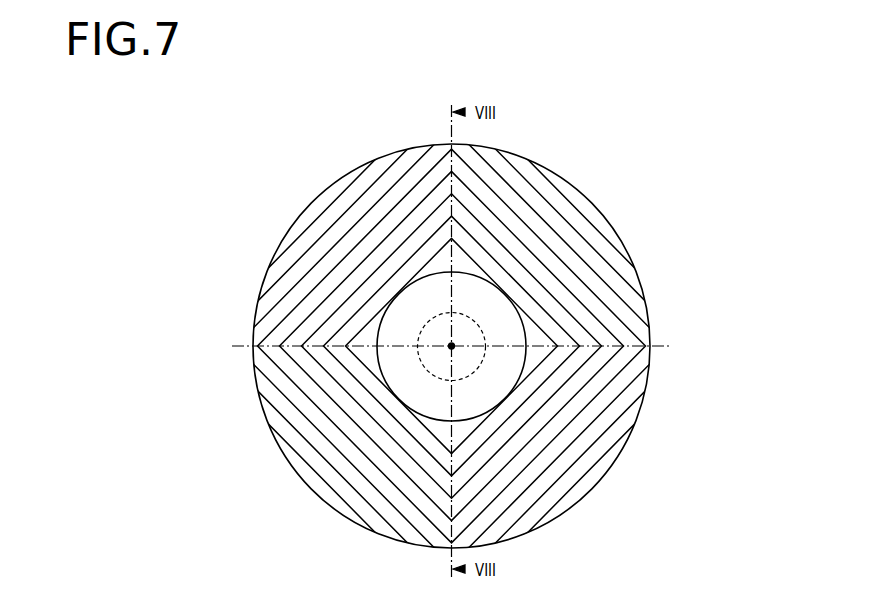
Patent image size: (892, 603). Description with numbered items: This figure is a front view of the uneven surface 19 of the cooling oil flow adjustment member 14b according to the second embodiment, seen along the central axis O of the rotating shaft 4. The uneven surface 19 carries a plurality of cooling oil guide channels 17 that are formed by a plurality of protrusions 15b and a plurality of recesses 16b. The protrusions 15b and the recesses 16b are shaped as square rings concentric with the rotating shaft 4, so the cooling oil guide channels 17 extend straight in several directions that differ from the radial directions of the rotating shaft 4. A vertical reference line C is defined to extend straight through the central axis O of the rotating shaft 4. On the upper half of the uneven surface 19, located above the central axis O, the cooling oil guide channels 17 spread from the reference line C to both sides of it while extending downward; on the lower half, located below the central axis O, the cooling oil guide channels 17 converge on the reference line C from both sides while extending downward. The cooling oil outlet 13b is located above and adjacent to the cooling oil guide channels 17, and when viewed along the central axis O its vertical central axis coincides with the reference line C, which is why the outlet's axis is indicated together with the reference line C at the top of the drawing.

The rotating shaft 4 is at (425, 368).
The cooling oil flow adjustment member 14b is at (578, 188).
The protrusions 15b is at (378, 212).
The recesses 16b is at (368, 247).
The cooling oil guide channels 17 is at (452, 346).
The uneven surface 19 is at (359, 95).
The central axis O is at (460, 336).
The reference line C is at (550, 339).
The cooling oil outlet 13b is at (452, 137).